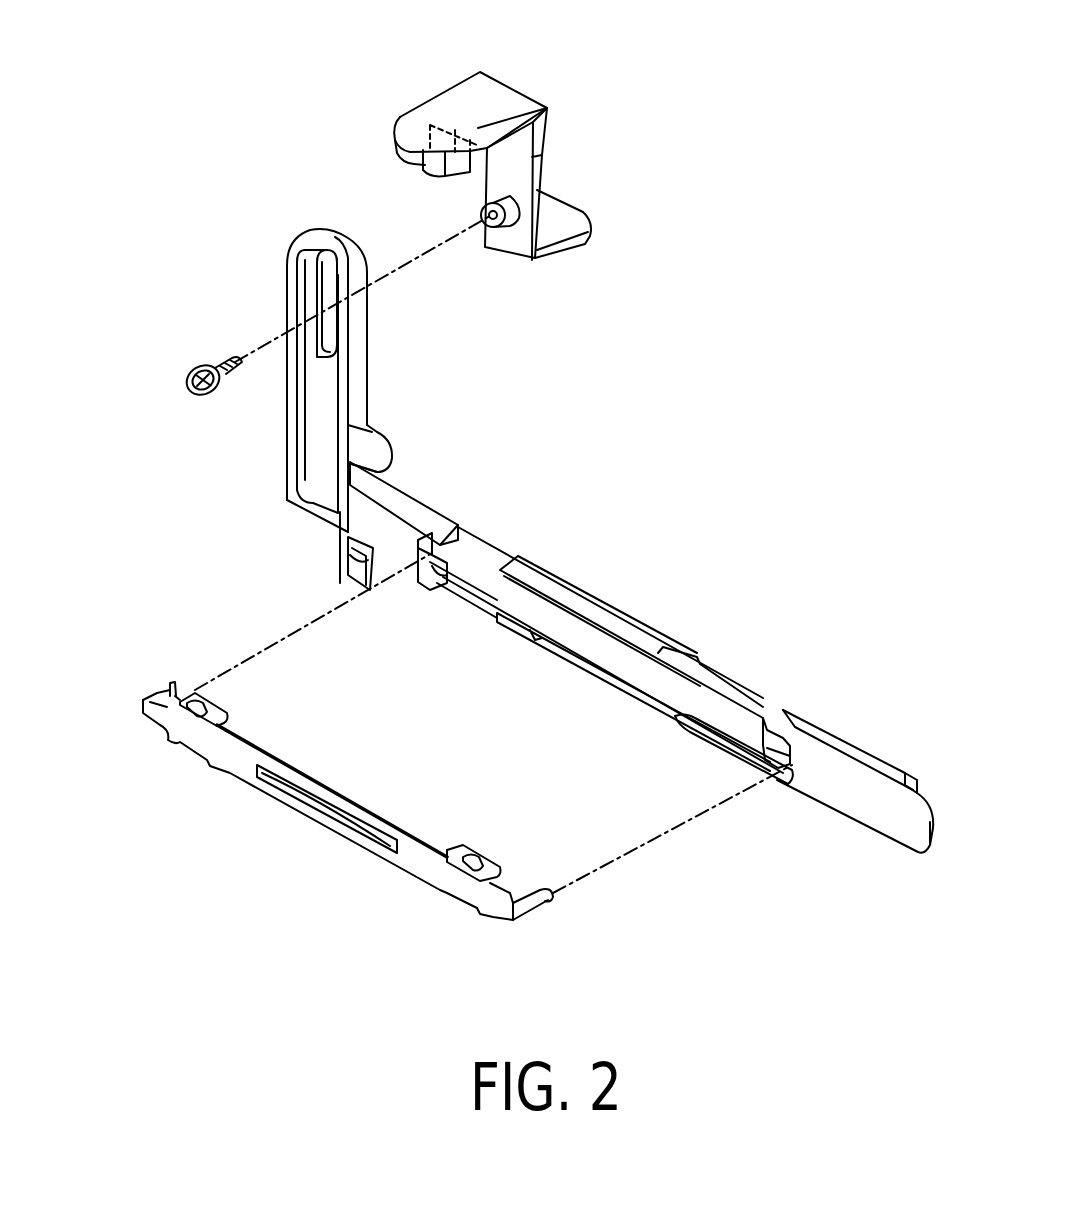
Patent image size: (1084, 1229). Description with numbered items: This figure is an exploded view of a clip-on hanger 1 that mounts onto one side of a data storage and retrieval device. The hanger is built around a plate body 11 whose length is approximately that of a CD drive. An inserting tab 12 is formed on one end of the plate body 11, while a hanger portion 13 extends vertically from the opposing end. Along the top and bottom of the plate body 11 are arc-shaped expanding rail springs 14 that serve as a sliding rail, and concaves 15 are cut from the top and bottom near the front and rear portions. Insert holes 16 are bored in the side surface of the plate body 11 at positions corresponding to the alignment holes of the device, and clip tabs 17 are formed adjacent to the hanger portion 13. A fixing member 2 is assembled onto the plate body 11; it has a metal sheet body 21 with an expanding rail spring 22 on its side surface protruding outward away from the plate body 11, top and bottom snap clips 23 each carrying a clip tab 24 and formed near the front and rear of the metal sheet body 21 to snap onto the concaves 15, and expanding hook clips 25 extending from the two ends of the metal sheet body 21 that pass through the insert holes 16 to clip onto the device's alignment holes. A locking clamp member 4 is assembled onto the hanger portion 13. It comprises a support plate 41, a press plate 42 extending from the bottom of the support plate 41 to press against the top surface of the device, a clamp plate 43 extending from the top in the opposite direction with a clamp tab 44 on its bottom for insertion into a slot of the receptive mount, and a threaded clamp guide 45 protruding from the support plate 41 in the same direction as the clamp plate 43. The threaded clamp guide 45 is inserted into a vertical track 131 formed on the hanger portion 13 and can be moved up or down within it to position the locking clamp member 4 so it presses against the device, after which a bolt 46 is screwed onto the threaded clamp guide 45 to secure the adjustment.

The clip-on hanger 1 is at (668, 585).
The fixing member 2 is at (298, 842).
The locking clamp member 4 is at (538, 66).
The plate body 11 is at (588, 605).
The inserting tab 12 is at (918, 828).
The hanger portion 13 is at (288, 398).
The vertical track 131 is at (330, 300).
The expanding rail springs 14 is at (732, 676).
The concaves 15 is at (485, 556).
The insert holes 16 is at (425, 548).
The clip tabs 17 is at (340, 560).
The metal sheet body 21 is at (435, 880).
The expanding rail spring 22 is at (300, 805).
The snap clips 23 is at (190, 700).
The clip tab 24 is at (215, 705).
The expanding hook clips 25 is at (178, 703).
The support plate 41 is at (490, 178).
The press plate 42 is at (565, 210).
The clamp plate 43 is at (430, 108).
The clamp tab 44 is at (455, 160).
The threaded clamp guide 45 is at (490, 226).
The bolt 46 is at (200, 392).